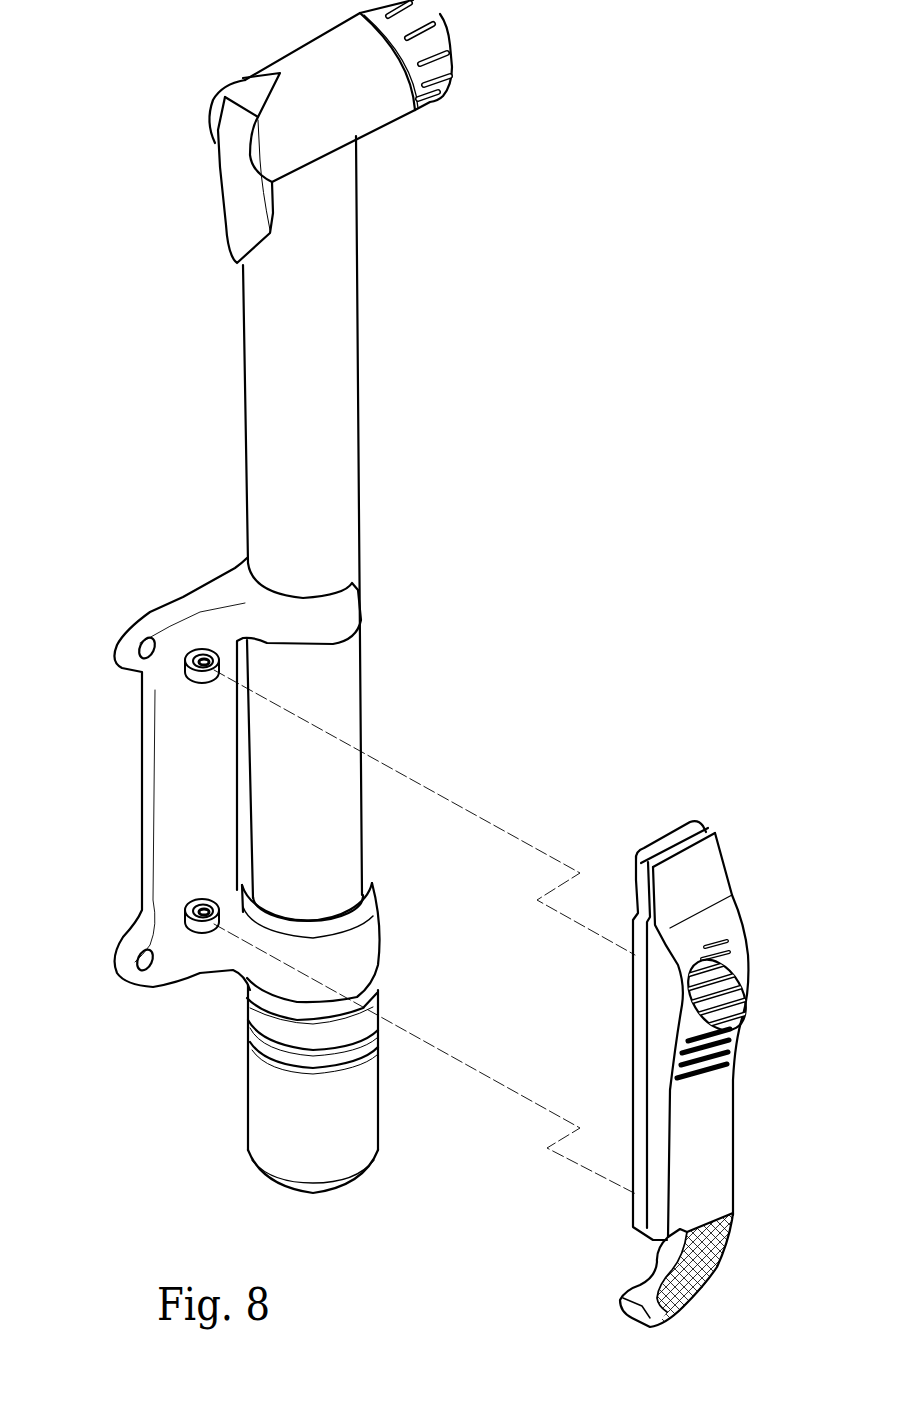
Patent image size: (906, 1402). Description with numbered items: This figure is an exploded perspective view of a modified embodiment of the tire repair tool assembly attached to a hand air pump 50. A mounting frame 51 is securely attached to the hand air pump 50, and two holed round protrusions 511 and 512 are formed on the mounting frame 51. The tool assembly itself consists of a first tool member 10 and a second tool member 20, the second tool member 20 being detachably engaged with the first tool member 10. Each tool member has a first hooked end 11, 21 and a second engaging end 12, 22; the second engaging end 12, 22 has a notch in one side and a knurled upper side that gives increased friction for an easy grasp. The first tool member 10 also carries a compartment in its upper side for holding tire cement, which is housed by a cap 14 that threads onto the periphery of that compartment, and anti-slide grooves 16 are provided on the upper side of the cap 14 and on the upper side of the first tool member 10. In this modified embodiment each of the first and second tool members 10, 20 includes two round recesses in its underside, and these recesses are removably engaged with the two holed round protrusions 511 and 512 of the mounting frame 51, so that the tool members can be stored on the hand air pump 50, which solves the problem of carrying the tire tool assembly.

The hand air pump 50 is at (343, 347).
The mounting frame 51 is at (178, 768).
The holed round protrusion 511 is at (192, 650).
The holed round protrusion 512 is at (187, 903).
The first tool member 10 is at (722, 1127).
The first hooked end 11 is at (708, 832).
The second engaging end 12 is at (707, 1278).
The cap 14 is at (740, 987).
The anti-slide grooves 16 is at (733, 1037).
The second tool member 20 is at (650, 1182).
The first hooked end 21 is at (680, 822).
The second engaging end 22 is at (630, 1303).